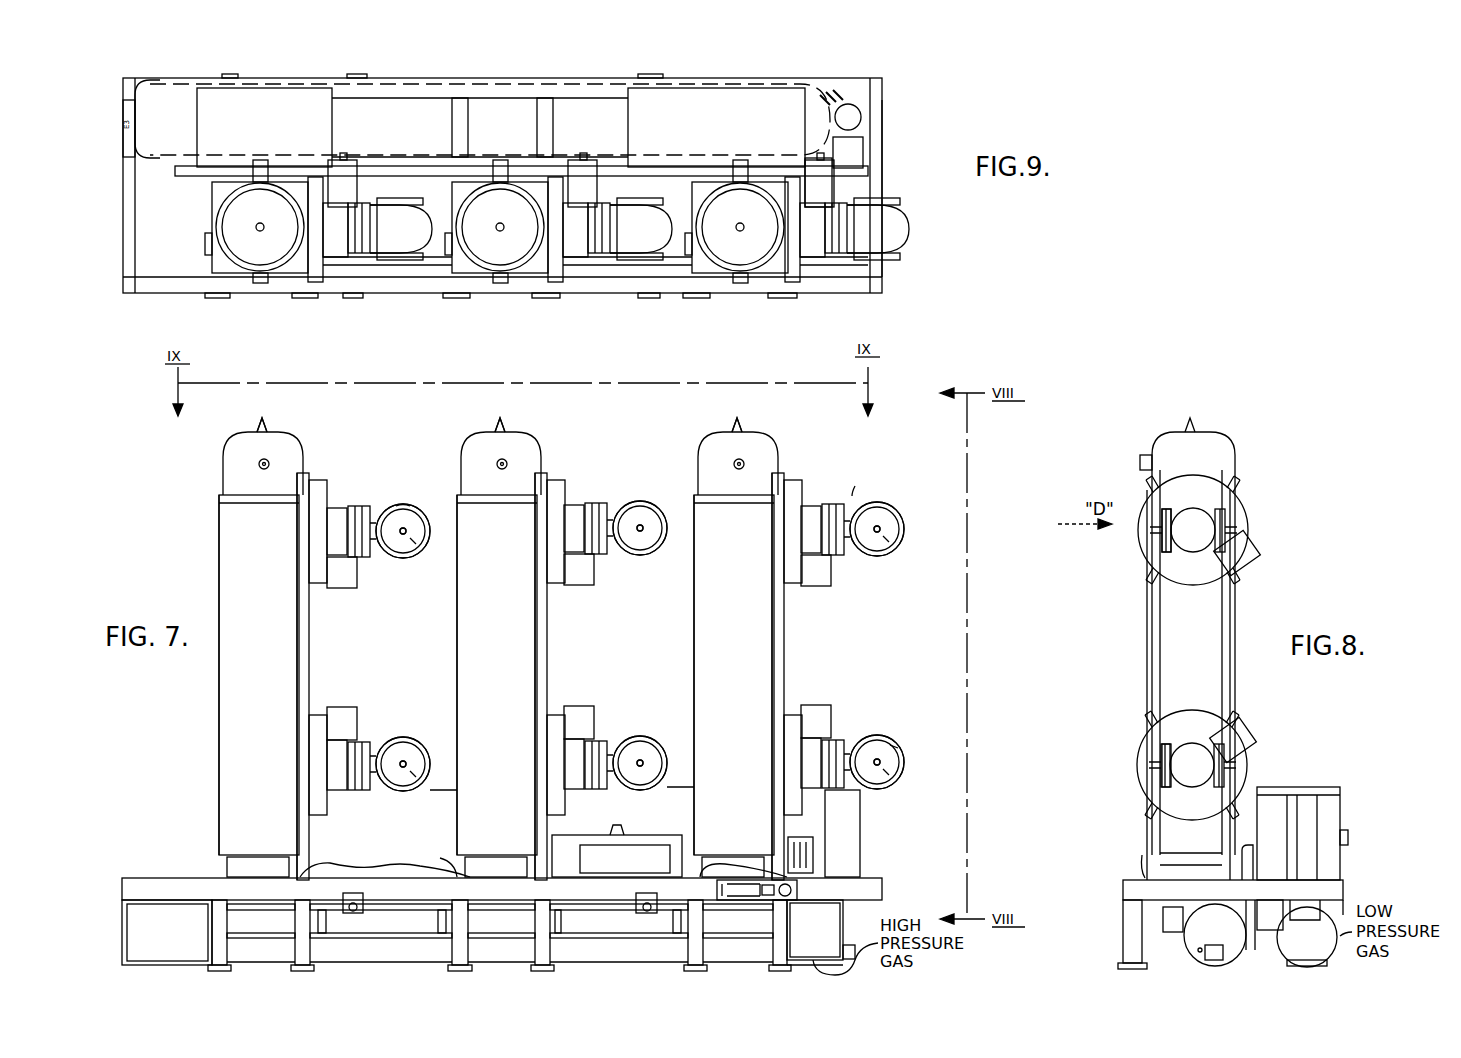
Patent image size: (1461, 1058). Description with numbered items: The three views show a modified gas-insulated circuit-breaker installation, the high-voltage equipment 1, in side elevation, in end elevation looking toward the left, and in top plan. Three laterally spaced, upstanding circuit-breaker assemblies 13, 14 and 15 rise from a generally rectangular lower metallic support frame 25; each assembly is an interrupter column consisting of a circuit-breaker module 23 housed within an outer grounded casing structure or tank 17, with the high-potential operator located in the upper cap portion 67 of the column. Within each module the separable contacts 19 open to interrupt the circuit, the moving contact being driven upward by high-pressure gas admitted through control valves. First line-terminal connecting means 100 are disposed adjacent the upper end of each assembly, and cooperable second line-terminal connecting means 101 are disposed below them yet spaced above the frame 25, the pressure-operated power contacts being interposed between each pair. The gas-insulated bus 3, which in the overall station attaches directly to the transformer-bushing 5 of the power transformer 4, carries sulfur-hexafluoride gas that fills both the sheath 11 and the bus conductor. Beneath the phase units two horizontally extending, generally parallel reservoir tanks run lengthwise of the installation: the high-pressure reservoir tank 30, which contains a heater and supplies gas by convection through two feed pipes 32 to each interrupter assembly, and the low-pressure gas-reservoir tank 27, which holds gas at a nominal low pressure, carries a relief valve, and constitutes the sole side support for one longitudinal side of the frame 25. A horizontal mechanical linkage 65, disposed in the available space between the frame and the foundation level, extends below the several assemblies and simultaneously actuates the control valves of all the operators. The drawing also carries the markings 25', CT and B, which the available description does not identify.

In FIG. 9, the high-voltage equipment 1 is at (893, 158).
In FIG. 7, the high-voltage equipment 1 is at (856, 498).
In FIG. 8, the high-voltage equipment 1 is at (1238, 460).
In FIG. 9, the gas-insulated bus 3 is at (380, 240).
In FIG. 7, the gas-insulated bus 3 is at (400, 560).
In FIG. 7, the power transformer 4 is at (398, 505).
In FIG. 8, the power transformer 4 is at (1195, 505).
In FIG. 7, the transformer-bushing 5 is at (403, 528).
In FIG. 8, the transformer-bushing 5 is at (1160, 533).
In FIG. 9, the sheath 11 is at (430, 232).
In FIG. 7, the sheath 11 is at (430, 515).
In FIG. 7, the circuit-breaker assembly 13 is at (268, 667).
In FIG. 7, the circuit-breaker assembly 14 is at (508, 667).
In FIG. 7, the circuit-breaker assembly 15 is at (749, 667).
In FIG. 8, the circuit-breaker assembly 15 is at (1204, 649).
In FIG. 7, the casing structure 17 is at (219, 718).
In FIG. 8, the casing structure 17 is at (1147, 665).
In FIG. 7, the separable contact 19 is at (882, 892).
In FIG. 8, the separable contact 19 is at (1123, 888).
In FIG. 7, the circuit-breaker module 23 is at (728, 850).
In FIG. 8, the circuit-breaker module 23 is at (1142, 875).
In FIG. 7, the support frame 25 is at (491, 880).
In FIG. 8, the support frame 25 is at (1214, 934).
In FIG. 9, the frame rails 25' is at (468, 311).
In FIG. 7, the frame rails 25' is at (531, 934).
In FIG. 9, the low-pressure gas-reservoir tank 27 is at (180, 150).
In FIG. 8, the low-pressure gas-reservoir tank 27 is at (1285, 950).
In FIG. 7, the high-pressure reservoir tank 30 is at (823, 912).
In FIG. 8, the high-pressure reservoir tank 30 is at (1190, 942).
In FIG. 7, the feed pipe 32 is at (638, 868).
In FIG. 9, the horizontal mechanical linkage 65 is at (688, 268).
In FIG. 7, the horizontal mechanical linkage 65 is at (365, 932).
In FIG. 8, the horizontal mechanical linkage 65 is at (1163, 920).
In FIG. 9, the upper cap portion 67 is at (260, 232).
In FIG. 7, the upper cap portion 67 is at (255, 426).
In FIG. 7, the first line-terminal connecting means 100 is at (412, 538).
In FIG. 7, the second line-terminal connecting means 101 is at (412, 771).
In FIG. 9, the cooling tube CT is at (316, 270).
In FIG. 7, the cooling tube CT is at (314, 492).
In FIG. 7, the direction B is at (905, 755).